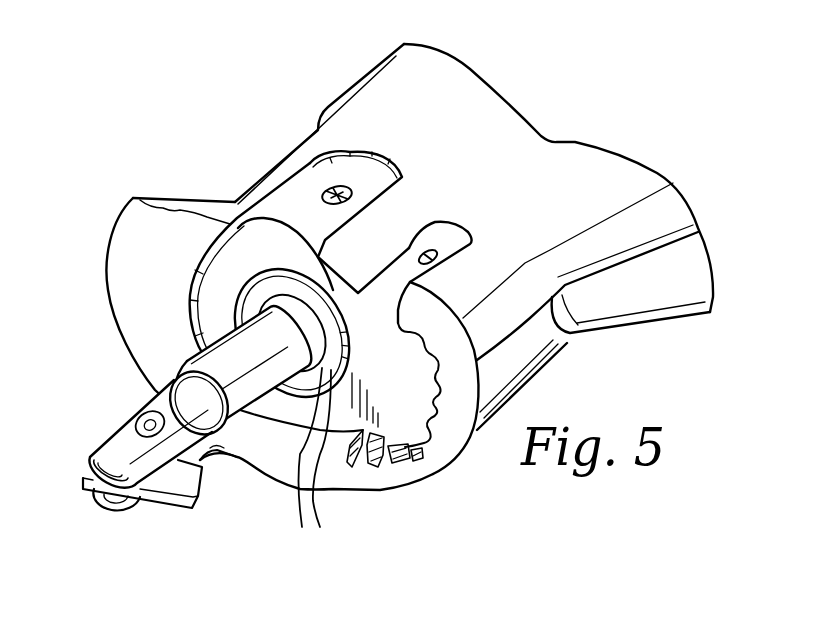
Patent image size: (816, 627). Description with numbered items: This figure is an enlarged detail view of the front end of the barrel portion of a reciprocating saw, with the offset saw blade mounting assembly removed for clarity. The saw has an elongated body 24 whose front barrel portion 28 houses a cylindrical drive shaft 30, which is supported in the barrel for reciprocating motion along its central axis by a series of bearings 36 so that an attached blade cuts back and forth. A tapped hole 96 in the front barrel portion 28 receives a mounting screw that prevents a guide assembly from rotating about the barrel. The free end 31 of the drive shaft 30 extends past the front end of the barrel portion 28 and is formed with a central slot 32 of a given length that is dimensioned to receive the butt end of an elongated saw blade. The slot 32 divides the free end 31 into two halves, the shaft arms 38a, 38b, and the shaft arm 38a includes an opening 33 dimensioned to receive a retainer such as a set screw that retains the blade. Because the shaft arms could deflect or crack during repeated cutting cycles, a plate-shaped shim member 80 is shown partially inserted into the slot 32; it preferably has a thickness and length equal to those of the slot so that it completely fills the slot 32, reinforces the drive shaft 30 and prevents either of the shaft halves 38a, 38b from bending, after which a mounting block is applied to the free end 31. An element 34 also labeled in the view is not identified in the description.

The body 24 is at (372, 108).
The front barrel portion 28 is at (391, 236).
The drive shaft 30 is at (197, 355).
The free end 31 is at (85, 453).
The central slot 32 is at (209, 450).
The opening 33 is at (142, 426).
The flange 34 is at (124, 210).
The bearings 36 is at (302, 527).
The shaft arm 38a is at (103, 452).
The shaft arm 38b is at (116, 500).
The shim member 80 is at (201, 480).
The tapped hole 96 is at (428, 253).